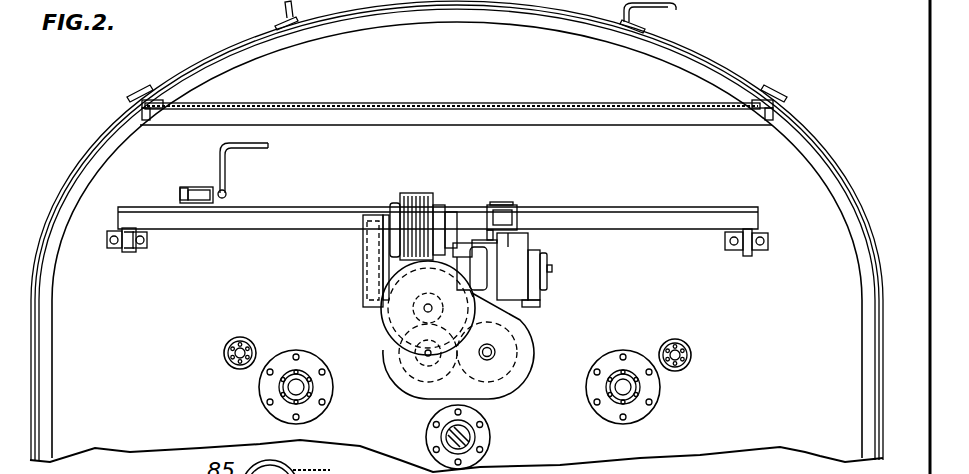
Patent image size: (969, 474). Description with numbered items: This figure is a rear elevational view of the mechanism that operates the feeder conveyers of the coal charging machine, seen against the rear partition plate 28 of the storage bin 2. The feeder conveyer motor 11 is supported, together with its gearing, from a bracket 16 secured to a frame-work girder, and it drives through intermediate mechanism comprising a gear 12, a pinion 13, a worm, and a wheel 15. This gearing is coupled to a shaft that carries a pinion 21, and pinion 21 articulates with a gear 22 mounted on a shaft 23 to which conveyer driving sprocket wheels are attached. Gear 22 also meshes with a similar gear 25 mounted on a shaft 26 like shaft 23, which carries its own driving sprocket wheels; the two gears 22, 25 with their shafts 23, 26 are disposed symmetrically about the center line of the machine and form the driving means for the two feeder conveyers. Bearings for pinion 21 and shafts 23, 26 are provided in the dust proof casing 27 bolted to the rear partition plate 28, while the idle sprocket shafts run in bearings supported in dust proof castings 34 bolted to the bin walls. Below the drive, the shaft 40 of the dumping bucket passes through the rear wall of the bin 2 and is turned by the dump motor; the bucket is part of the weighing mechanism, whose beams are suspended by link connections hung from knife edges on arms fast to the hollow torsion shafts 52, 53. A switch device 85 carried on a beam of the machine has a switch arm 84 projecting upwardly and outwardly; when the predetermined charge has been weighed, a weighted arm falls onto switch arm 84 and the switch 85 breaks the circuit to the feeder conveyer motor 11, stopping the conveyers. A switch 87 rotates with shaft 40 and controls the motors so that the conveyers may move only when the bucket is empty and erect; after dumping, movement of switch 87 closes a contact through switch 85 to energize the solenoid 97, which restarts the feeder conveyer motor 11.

The storage bin 2 is at (617, 15).
The feeder conveyer motor 11 is at (421, 216).
The gear 12 is at (367, 285).
The pinion 13 is at (363, 237).
The wheel 15 is at (383, 322).
The bracket 16 is at (424, 312).
The pinion 21 is at (522, 303).
The gear 22 is at (410, 372).
The shaft 23 is at (427, 356).
The gear 25 is at (517, 350).
The shaft 26 is at (500, 362).
The dust proof casing 27 is at (507, 397).
The rear partition plate 28 is at (457, 230).
The dust proof castings 34 is at (263, 389).
The shaft 40 is at (472, 437).
The hollow torsion shaft 52 is at (229, 346).
The hollow torsion shaft 53 is at (683, 343).
The switch arm 84 is at (256, 160).
The switch device 85 is at (205, 188).
The switch 87 is at (286, 459).
The solenoid 97 is at (506, 218).